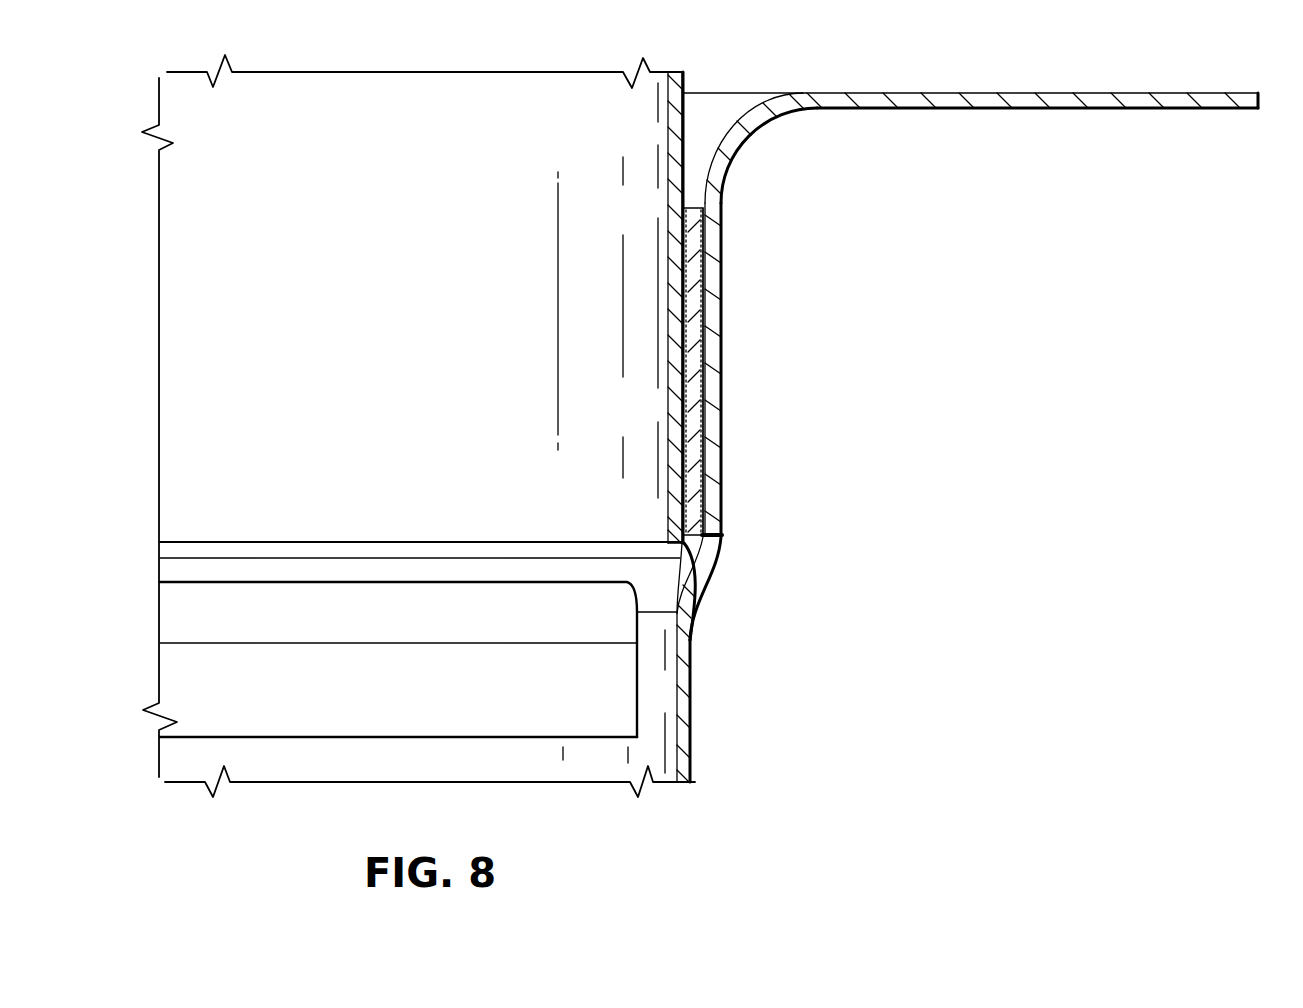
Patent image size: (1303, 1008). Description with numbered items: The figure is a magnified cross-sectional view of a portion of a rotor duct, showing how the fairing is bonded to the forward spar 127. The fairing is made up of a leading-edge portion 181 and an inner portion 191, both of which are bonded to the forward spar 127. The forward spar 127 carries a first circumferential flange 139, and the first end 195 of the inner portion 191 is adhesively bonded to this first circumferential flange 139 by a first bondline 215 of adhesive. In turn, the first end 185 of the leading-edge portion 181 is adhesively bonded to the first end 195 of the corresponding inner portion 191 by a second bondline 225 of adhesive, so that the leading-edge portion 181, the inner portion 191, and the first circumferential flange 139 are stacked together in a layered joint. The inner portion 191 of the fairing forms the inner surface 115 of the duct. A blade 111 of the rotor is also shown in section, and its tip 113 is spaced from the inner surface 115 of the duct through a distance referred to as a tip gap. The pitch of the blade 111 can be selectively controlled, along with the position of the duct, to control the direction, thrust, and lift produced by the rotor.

The blade 111 is at (337, 738).
The tip 113 is at (637, 715).
The inner surface 115 is at (672, 692).
The forward spar 127 is at (940, 93).
The first circumferential flange 139 is at (722, 511).
The leading-edge portion 181 is at (668, 140).
The first end of leading-edge portion 185 is at (668, 523).
The inner portion 191 is at (690, 745).
The first end of inner portion 195 is at (689, 210).
The first bondline 215 is at (705, 395).
The second bondline 225 is at (686, 401).